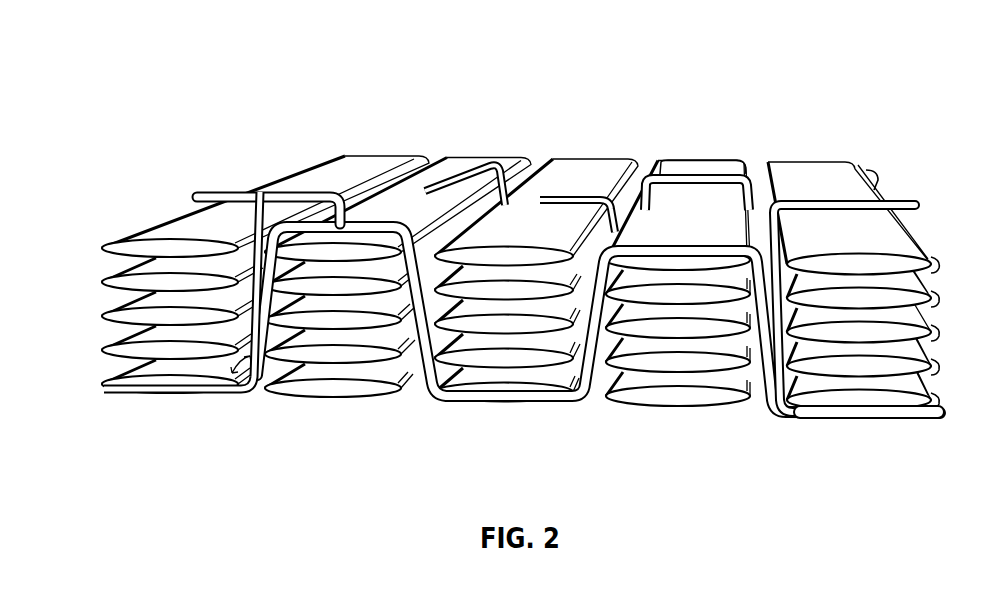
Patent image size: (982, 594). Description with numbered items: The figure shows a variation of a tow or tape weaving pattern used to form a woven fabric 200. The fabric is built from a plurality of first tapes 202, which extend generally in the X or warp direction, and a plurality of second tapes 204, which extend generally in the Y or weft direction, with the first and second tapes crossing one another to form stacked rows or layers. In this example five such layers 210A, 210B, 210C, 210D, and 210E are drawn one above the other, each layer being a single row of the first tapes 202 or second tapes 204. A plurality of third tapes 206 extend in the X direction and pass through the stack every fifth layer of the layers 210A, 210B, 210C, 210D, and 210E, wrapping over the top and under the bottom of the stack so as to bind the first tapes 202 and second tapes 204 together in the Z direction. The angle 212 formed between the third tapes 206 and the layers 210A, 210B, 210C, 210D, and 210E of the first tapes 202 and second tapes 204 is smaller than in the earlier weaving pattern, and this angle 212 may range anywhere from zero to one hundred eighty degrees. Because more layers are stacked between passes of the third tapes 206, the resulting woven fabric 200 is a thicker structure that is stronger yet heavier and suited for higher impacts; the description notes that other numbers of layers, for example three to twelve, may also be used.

The woven fabric 200 is at (486, 261).
The plurality of first tapes 202 is at (258, 188).
The plurality of second tapes 204 is at (485, 260).
The plurality of third tapes 206 is at (568, 168).
The layer 210A is at (175, 232).
The layer 210B is at (132, 283).
The layer 210C is at (133, 316).
The layer 210D is at (134, 350).
The layer 210E is at (135, 385).
The angle 212 is at (233, 367).